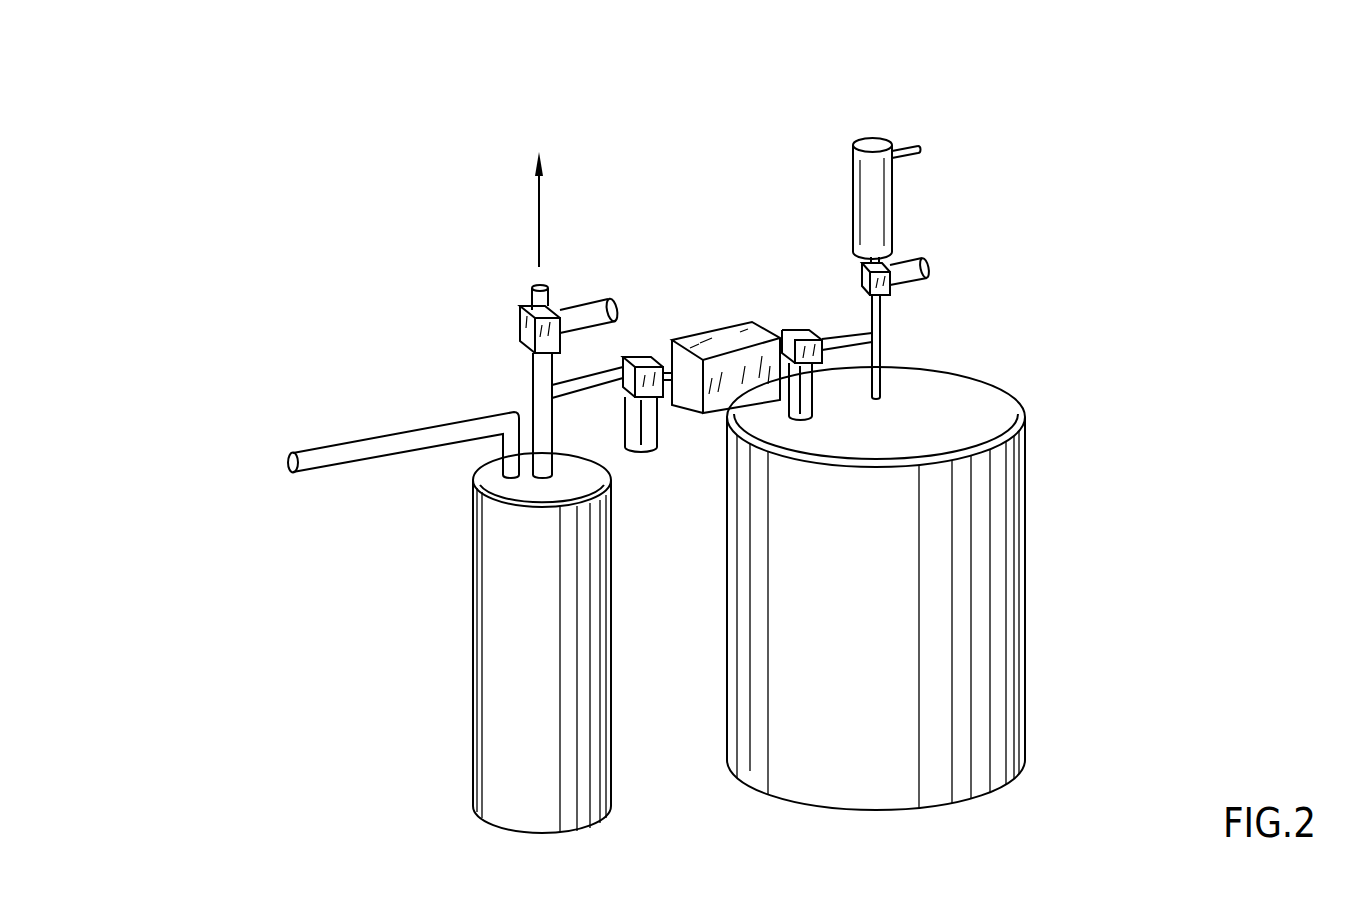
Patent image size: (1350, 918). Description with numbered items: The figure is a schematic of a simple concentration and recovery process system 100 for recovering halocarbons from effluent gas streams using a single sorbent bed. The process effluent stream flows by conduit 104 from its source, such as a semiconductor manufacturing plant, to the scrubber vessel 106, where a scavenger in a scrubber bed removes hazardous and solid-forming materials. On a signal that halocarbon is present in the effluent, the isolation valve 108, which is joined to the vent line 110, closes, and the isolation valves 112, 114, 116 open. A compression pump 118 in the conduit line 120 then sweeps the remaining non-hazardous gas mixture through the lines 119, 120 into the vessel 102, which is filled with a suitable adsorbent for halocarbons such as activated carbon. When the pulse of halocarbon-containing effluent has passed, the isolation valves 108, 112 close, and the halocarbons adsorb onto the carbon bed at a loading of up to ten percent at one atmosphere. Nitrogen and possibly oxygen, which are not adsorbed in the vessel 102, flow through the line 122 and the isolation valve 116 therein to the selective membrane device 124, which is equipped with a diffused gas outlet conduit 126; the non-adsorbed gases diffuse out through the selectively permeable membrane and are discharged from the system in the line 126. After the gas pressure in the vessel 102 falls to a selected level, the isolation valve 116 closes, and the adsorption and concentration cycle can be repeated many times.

The concentration and recovery process system 100 is at (828, 49).
The sorbent bed vessel 102 is at (1025, 596).
The conduit 104 is at (360, 440).
The scrubber vessel 106 is at (473, 601).
The isolation valve 108 is at (520, 328).
The vent line 110 is at (532, 305).
The isolation valve 112 is at (620, 368).
The isolation valve 114 is at (803, 328).
The isolation valve 116 is at (905, 262).
The compression pump 118 is at (725, 338).
The line 119 is at (532, 400).
The conduit line 120 is at (585, 392).
The line 122 is at (880, 330).
The selective membrane device 124 is at (893, 206).
The diffused gas outlet conduit 126 is at (918, 147).